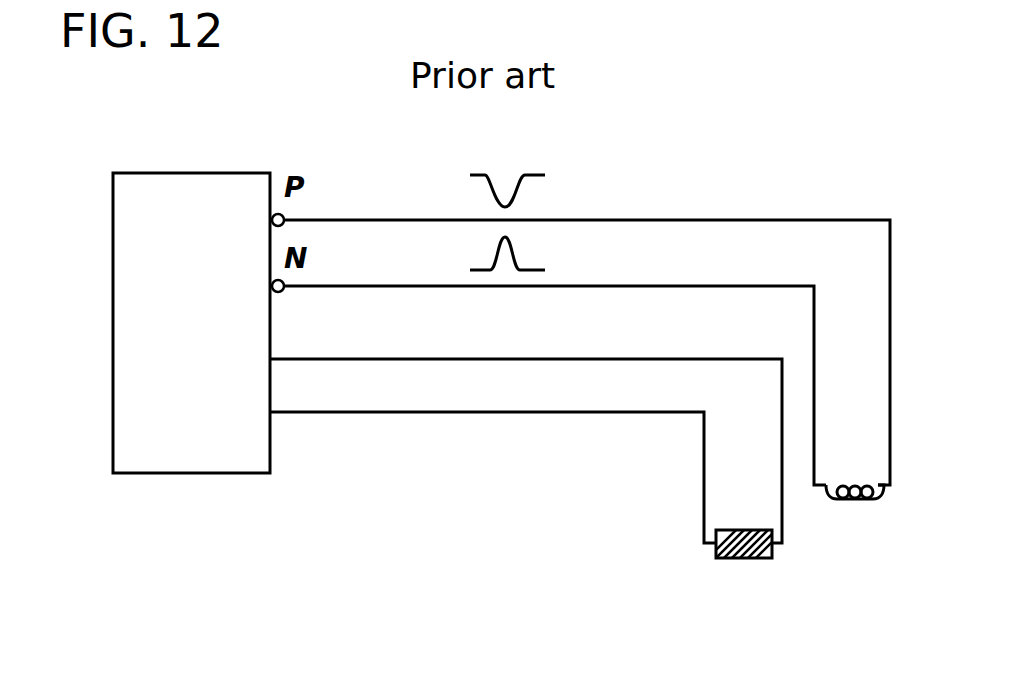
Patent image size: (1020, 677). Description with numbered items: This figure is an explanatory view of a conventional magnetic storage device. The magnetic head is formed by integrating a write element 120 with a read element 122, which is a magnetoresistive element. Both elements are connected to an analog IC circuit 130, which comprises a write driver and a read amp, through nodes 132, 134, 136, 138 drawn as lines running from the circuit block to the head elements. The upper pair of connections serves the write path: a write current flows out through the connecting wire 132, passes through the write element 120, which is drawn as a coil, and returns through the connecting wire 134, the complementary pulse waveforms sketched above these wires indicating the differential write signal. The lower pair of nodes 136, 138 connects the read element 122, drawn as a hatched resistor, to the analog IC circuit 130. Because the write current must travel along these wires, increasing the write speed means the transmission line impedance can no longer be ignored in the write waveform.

The write element 120 is at (853, 508).
The read element 122 is at (740, 558).
The analog IC circuit 130 is at (163, 473).
The connecting wire 132 is at (600, 220).
The connecting wire 134 is at (620, 286).
The node 136 is at (515, 359).
The node 138 is at (500, 412).